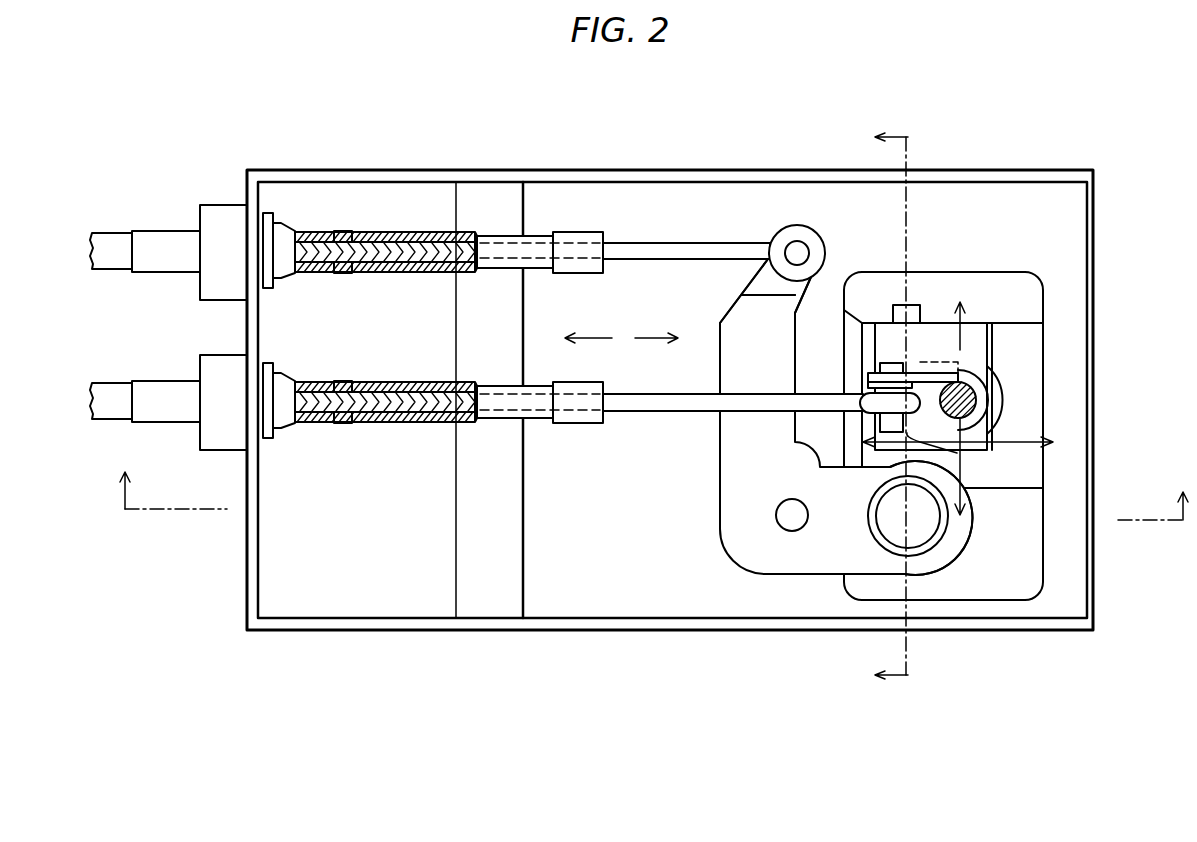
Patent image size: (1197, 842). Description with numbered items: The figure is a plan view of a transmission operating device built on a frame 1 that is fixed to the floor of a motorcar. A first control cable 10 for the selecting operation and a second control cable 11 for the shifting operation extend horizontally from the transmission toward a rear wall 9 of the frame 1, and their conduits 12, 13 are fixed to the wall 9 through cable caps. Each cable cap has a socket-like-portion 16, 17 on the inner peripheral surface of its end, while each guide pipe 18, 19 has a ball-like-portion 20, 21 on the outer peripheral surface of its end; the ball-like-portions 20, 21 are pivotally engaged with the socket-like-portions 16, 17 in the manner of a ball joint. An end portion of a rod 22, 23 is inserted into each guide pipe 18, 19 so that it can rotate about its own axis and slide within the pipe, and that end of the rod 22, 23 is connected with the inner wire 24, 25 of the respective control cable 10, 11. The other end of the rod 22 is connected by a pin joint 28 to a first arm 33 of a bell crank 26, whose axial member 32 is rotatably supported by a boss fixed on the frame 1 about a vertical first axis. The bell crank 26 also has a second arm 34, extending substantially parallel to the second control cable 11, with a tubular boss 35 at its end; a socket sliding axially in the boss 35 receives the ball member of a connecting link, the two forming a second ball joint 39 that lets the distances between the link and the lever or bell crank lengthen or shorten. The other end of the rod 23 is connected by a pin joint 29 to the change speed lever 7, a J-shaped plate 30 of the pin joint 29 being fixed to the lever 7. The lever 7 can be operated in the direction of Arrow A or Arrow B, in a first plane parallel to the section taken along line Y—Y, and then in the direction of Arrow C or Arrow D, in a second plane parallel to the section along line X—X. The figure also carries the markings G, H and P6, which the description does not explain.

The frame 1 is at (933, 205).
The change speed lever 7 is at (975, 398).
The rear wall 9 is at (248, 522).
The first control cable 10 is at (179, 185).
The second control cable 11 is at (180, 431).
The conduit 12 is at (118, 232).
The conduit 13 is at (112, 395).
The socket-like-portion 16 is at (345, 232).
The socket-like-portion 17 is at (363, 559).
The guide pipe 18 is at (405, 232).
The guide pipe 19 is at (387, 565).
The ball-like-portion 20 is at (356, 232).
The ball-like-portion 21 is at (334, 559).
The rod 22 is at (628, 250).
The rod 23 is at (652, 403).
The inner wire 24 is at (436, 232).
The inner wire 25 is at (412, 559).
The bell crank 26 is at (870, 403).
The pin joint 28 is at (813, 207).
The pin joint 29 is at (931, 355).
The J-shaped plate 30 is at (960, 370).
The axial member 32 is at (788, 518).
The first arm 33 is at (758, 335).
The second arm 34 is at (847, 547).
The tubular boss 35 is at (932, 574).
The second ball joint 39 is at (943, 535).
The Arrow A is at (957, 453).
The Arrow B is at (965, 318).
The Arrow C is at (963, 497).
The Arrow D is at (1043, 440).
The direction G is at (660, 333).
The direction H is at (583, 333).
The housing portion P6 is at (908, 285).
The line X— X is at (653, 484).
The line Y— Y is at (880, 407).